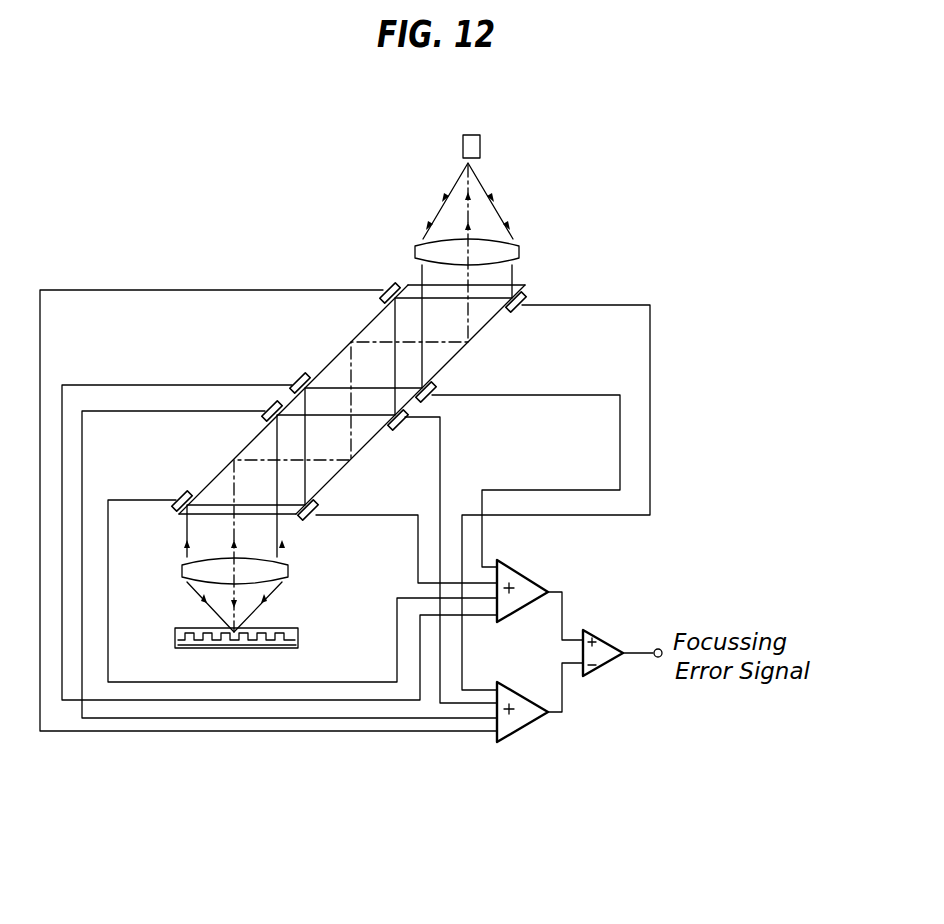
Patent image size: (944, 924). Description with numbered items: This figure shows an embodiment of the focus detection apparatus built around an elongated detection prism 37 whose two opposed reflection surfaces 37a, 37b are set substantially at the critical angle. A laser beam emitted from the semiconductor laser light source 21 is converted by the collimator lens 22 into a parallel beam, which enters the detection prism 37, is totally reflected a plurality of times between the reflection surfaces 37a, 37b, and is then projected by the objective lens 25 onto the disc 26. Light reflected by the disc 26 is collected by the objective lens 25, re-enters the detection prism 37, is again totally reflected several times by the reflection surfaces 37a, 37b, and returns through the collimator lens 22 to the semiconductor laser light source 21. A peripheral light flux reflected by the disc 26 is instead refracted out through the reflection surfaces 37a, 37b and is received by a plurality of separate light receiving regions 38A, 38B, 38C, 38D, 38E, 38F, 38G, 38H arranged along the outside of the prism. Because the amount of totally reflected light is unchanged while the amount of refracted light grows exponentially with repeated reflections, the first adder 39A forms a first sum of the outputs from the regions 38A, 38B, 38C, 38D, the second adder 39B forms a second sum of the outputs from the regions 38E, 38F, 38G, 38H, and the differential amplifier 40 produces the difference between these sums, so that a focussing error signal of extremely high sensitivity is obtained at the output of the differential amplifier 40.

The semiconductor laser light source 21 is at (480, 147).
The collimator lens 22 is at (519, 250).
The objective lens 25 is at (288, 571).
The disc 26 is at (298, 630).
The detection prism 37 is at (328, 399).
The reflection surface 37a is at (250, 441).
The reflection surface 37b is at (455, 355).
The light receiving region 38A is at (176, 493).
The light receiving region 38B is at (314, 518).
The light receiving region 38C is at (297, 377).
The light receiving region 38D is at (436, 386).
The light receiving region 38E is at (262, 416).
The light receiving region 38F is at (408, 408).
The light receiving region 38G is at (388, 285).
The light receiving region 38H is at (524, 296).
The first adder 39A is at (530, 582).
The second adder 39B is at (528, 722).
The differential amplifier 40 is at (604, 648).